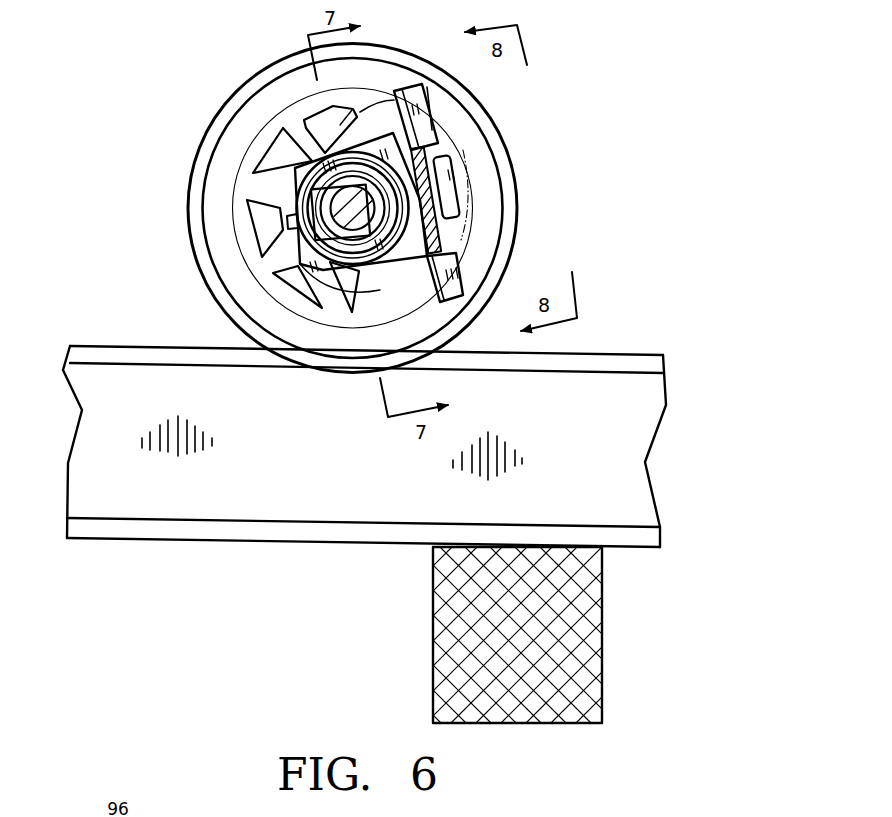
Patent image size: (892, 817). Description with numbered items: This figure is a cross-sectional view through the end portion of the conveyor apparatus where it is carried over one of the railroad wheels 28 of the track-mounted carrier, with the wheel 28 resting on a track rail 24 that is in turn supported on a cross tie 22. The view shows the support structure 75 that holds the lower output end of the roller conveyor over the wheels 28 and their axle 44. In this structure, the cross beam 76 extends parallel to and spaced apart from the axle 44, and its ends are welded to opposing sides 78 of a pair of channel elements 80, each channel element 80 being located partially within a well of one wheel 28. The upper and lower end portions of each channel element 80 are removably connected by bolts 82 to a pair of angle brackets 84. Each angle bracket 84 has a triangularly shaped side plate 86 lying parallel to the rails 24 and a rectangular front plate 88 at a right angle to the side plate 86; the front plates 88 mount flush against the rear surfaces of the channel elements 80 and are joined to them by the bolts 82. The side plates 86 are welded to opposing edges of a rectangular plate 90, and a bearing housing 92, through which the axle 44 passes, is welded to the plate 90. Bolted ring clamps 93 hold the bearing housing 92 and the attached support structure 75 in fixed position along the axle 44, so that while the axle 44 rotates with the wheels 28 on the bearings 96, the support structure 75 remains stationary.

The cross tie 22 is at (592, 607).
The track rail 24 is at (648, 420).
The railroad wheel 28 is at (214, 303).
The axle 44 is at (330, 312).
The support structure 75 is at (474, 221).
The cross beam 76 is at (438, 188).
The side of channel element 78 is at (427, 87).
The channel element 80 is at (418, 124).
The bolt 82 is at (360, 112).
The angle bracket 84 is at (397, 88).
The side plate 86 is at (303, 119).
The front plate 88 is at (325, 153).
The rectangular plate 90 is at (425, 165).
The bearing housing 92 is at (295, 168).
The ring clamp 93 is at (293, 265).
The bearing 96 is at (313, 194).